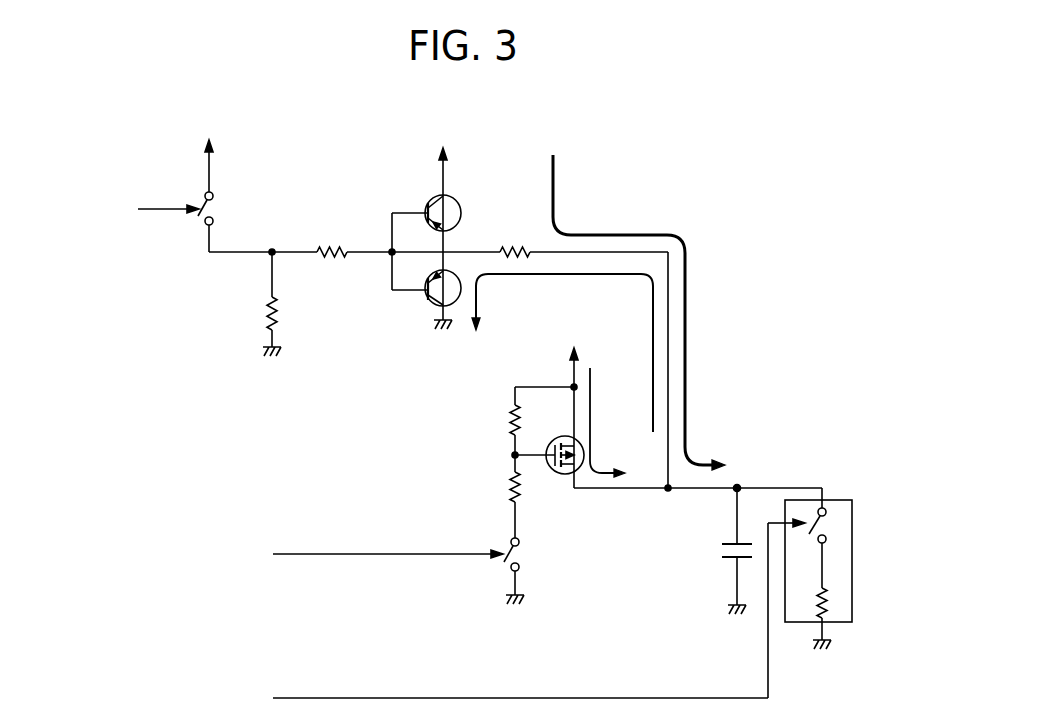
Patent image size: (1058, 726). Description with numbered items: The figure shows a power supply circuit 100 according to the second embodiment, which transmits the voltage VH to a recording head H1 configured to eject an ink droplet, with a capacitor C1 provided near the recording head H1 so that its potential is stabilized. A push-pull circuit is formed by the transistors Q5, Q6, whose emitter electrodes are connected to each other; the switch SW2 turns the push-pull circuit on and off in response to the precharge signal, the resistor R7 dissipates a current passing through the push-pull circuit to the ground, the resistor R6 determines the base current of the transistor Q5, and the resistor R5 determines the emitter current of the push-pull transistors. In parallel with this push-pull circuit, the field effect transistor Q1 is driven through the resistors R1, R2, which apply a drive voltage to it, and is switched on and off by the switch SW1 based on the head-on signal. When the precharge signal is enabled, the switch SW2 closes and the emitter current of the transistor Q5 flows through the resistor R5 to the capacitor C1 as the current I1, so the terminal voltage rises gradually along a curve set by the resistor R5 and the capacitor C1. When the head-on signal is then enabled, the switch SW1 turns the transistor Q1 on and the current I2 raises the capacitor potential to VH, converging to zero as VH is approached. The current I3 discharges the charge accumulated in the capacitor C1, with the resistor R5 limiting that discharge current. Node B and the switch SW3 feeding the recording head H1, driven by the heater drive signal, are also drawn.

The power supply circuit 100 is at (748, 182).
The switch SW2 is at (201, 223).
The resistor R7 is at (264, 313).
The resistor R6 is at (330, 243).
The transistor Q5 is at (447, 198).
The transistor Q6 is at (427, 305).
The resistor R5 is at (503, 243).
The current I1 is at (639, 312).
The current I2 is at (607, 422).
The current I3 is at (562, 353).
The resistor R2 is at (510, 420).
The resistor R1 is at (510, 487).
The field effect transistor Q1 is at (563, 477).
The switch SW1 is at (520, 551).
The capacitor C1 is at (725, 550).
The node B is at (740, 486).
The heater switch SW3 is at (827, 522).
The recording head H1 is at (852, 553).